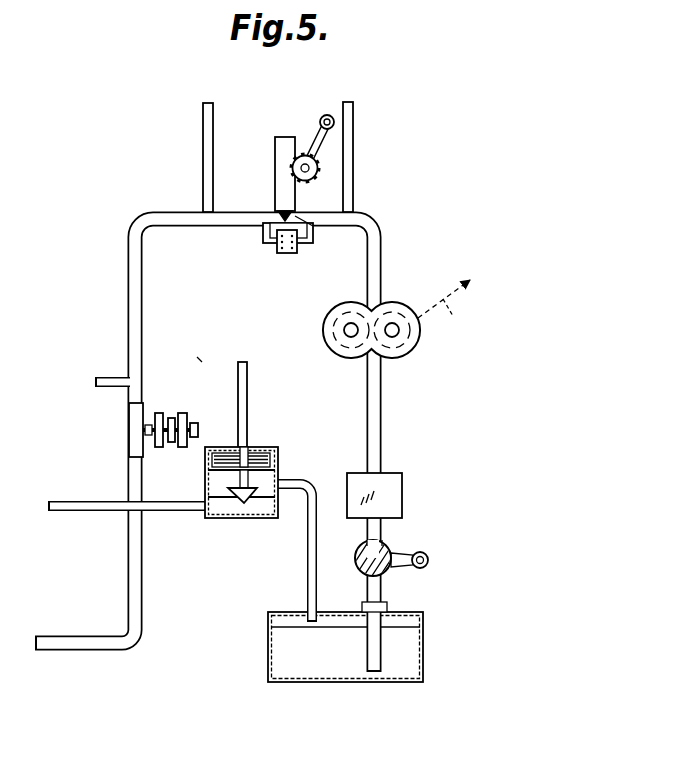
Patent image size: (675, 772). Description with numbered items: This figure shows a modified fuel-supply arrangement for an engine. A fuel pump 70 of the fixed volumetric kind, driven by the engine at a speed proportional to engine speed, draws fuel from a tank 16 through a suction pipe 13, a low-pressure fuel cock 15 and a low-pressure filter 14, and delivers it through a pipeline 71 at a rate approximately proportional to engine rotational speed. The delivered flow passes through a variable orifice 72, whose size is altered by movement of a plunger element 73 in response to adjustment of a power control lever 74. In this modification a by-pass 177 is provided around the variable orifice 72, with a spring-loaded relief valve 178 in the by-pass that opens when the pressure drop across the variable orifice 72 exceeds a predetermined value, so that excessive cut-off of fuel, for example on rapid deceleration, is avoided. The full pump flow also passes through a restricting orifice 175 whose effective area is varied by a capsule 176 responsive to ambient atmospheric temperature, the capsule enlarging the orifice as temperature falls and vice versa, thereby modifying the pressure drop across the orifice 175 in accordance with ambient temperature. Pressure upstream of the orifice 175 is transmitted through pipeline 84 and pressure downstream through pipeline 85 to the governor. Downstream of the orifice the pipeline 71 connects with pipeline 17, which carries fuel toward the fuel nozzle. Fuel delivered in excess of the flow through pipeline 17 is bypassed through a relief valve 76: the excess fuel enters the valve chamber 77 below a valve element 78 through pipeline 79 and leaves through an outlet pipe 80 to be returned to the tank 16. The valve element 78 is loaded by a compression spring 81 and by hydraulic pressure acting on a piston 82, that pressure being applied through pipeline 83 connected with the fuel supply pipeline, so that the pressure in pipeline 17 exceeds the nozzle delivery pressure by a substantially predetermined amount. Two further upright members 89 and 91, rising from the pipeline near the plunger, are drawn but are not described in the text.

The suction pipe 13 is at (382, 587).
The low-pressure filter 14 is at (397, 473).
The low-pressure fuel cock 15 is at (387, 552).
The tank 16 is at (403, 620).
The pipeline 17 is at (83, 652).
The fuel pump 70 is at (400, 342).
The pipeline 71 is at (382, 240).
The variable orifice 72 is at (305, 223).
The plunger element 73 is at (283, 162).
The power control lever 74 is at (316, 130).
The relief valve 76 is at (203, 473).
The valve chamber 77 is at (223, 508).
The valve element 78 is at (245, 500).
The pipeline 79 is at (175, 510).
The outlet pipe 80 is at (303, 577).
The compression spring 81 is at (265, 447).
The piston 82 is at (278, 463).
The pipeline 83 is at (247, 377).
The pipeline 84 is at (105, 377).
The pipeline 85 is at (80, 514).
The rod 89 is at (353, 170).
The rod 91 is at (203, 146).
The restricting orifice 175 is at (133, 437).
The capsule 176 is at (170, 417).
The by-pass 177 is at (263, 232).
The spring-loaded relief valve 178 is at (291, 253).